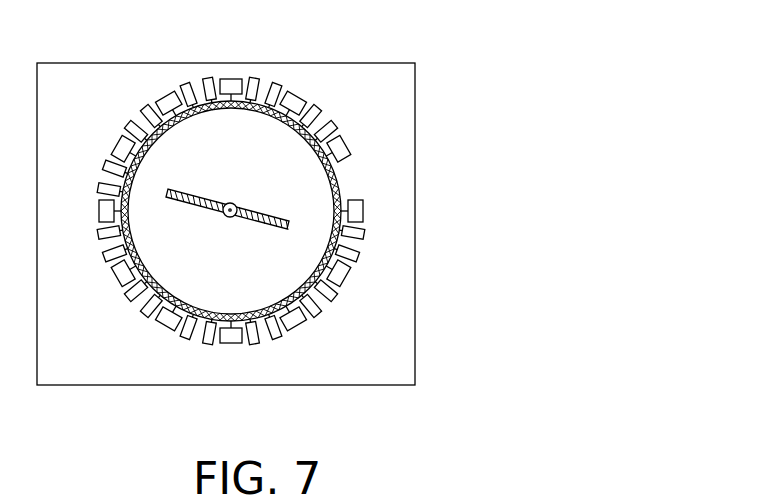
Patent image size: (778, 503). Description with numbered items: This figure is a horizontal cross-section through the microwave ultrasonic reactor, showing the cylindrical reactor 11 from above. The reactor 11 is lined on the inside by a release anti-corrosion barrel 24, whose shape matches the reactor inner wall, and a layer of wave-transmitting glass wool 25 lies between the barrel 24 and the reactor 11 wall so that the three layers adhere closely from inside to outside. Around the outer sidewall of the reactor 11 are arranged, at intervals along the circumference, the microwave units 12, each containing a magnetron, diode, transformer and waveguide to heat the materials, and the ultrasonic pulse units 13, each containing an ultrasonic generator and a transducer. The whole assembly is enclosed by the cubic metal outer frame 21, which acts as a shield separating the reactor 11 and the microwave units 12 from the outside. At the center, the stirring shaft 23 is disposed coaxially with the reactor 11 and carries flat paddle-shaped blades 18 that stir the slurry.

The outer frame 21 is at (416, 139).
The reactor 11 is at (362, 197).
The microwave unit 12 is at (298, 96).
The ultrasonic pulse unit 13 is at (330, 122).
The release anti-corrosion barrel 24 is at (328, 280).
The stirring shaft 23 is at (262, 222).
The blades 18 is at (265, 223).
The glass wool 25 is at (225, 218).